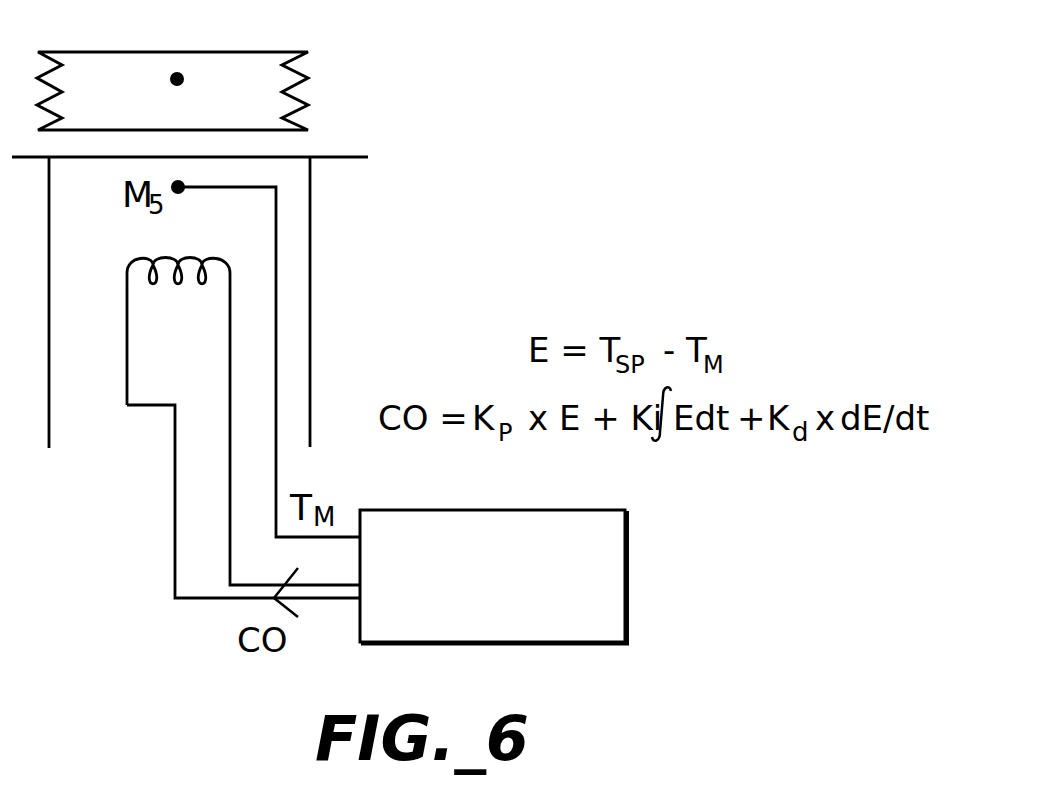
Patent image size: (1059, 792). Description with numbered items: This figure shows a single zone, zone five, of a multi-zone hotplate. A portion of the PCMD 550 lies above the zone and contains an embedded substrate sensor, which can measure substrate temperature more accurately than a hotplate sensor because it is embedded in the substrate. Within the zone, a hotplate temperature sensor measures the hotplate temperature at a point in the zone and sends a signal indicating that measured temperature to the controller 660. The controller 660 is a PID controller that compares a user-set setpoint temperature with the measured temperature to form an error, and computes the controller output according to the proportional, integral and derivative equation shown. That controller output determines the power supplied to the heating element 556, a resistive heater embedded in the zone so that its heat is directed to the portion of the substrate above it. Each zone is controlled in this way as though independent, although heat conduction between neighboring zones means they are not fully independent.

The PCMD 550 is at (247, 63).
The heating element 556 is at (232, 305).
The controller 660 is at (522, 607).